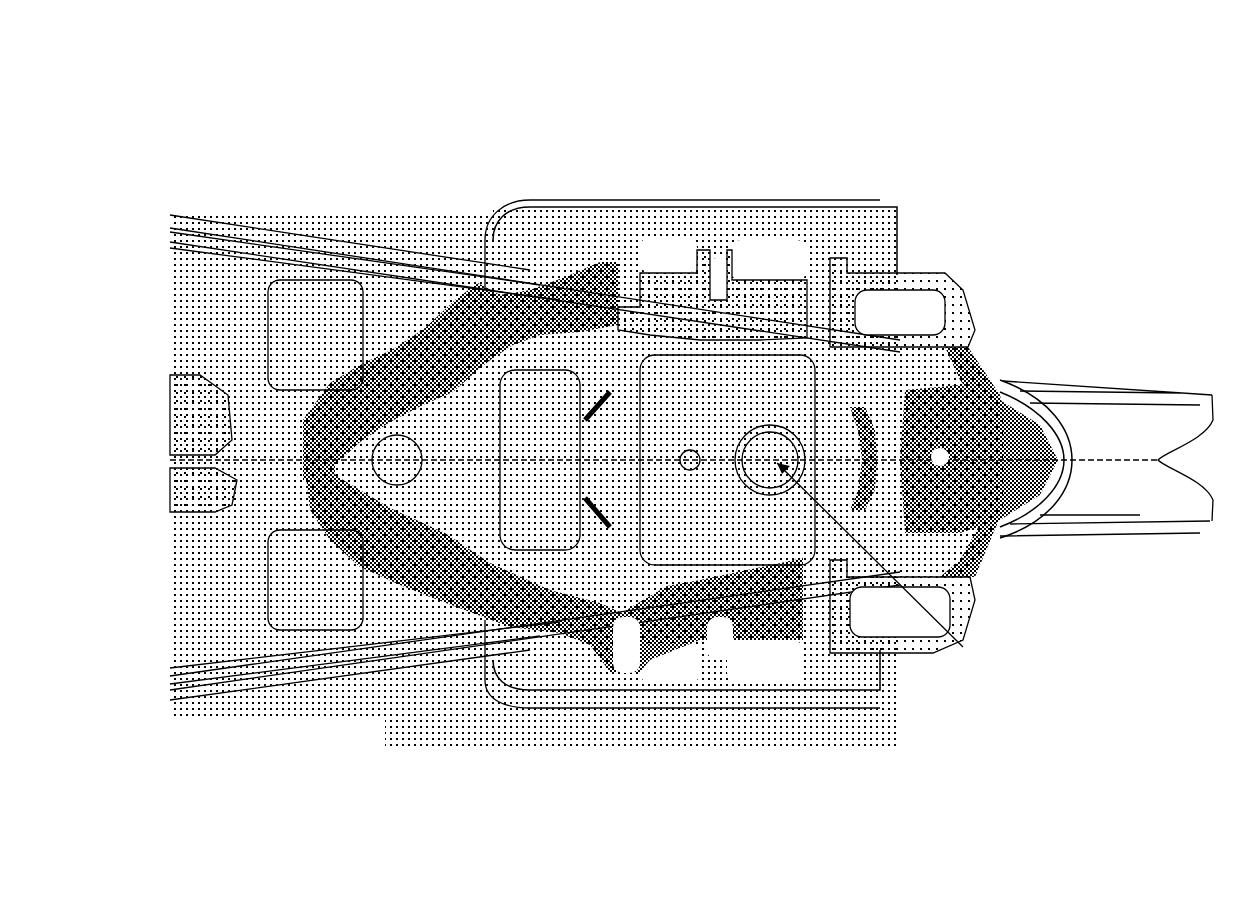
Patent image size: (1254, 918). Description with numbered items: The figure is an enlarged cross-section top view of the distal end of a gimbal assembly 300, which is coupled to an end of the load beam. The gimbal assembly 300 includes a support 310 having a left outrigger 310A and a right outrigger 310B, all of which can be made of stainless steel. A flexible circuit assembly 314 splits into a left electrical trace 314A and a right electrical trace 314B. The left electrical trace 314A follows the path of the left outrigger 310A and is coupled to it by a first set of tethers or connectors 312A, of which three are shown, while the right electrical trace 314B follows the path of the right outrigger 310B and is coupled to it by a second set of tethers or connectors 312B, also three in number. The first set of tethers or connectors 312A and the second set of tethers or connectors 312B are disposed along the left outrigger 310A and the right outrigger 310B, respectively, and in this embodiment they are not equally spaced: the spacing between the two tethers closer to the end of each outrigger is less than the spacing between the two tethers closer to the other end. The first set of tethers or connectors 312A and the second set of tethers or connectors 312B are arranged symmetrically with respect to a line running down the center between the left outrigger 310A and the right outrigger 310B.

The gimbal assembly 300 is at (640, 53).
The support 310 is at (200, 628).
The left outrigger 310A is at (890, 228).
The right outrigger 310B is at (863, 693).
The first set of tethers or connectors 312A is at (717, 287).
The second set of tethers or connectors 312B is at (718, 640).
The flexible circuit assembly 314 is at (160, 440).
The left electrical trace 314A is at (360, 367).
The right electrical trace 314B is at (388, 560).